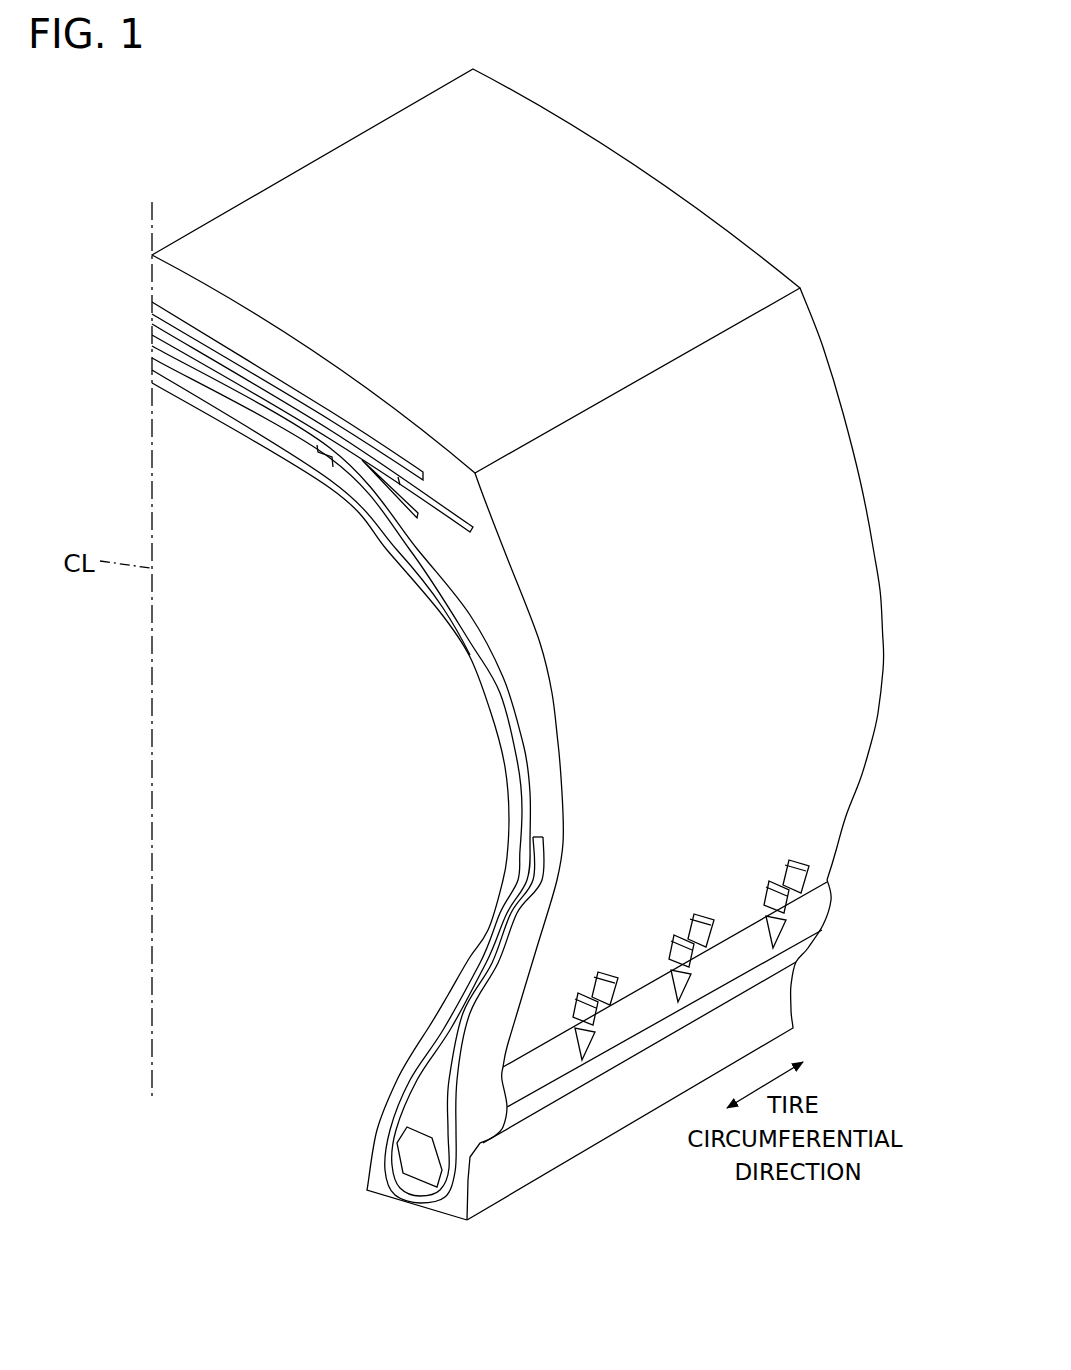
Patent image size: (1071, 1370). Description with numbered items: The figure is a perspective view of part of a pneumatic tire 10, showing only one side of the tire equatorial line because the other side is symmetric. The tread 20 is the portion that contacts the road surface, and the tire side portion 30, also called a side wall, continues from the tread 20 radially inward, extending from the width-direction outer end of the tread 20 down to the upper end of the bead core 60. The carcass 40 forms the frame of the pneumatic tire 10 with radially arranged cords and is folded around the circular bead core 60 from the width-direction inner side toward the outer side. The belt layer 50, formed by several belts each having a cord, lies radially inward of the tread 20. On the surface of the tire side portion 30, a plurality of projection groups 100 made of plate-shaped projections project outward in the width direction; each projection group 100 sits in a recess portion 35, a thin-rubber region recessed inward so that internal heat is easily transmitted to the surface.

The pneumatic tire 10 is at (622, 145).
The tread 20 is at (462, 244).
The tire side portion 30 is at (850, 742).
The recess portion 35 is at (834, 886).
The carcass 40 is at (520, 808).
The belt layer 50 is at (323, 401).
The bead core 60 is at (415, 1154).
The projection group 100 is at (595, 967).